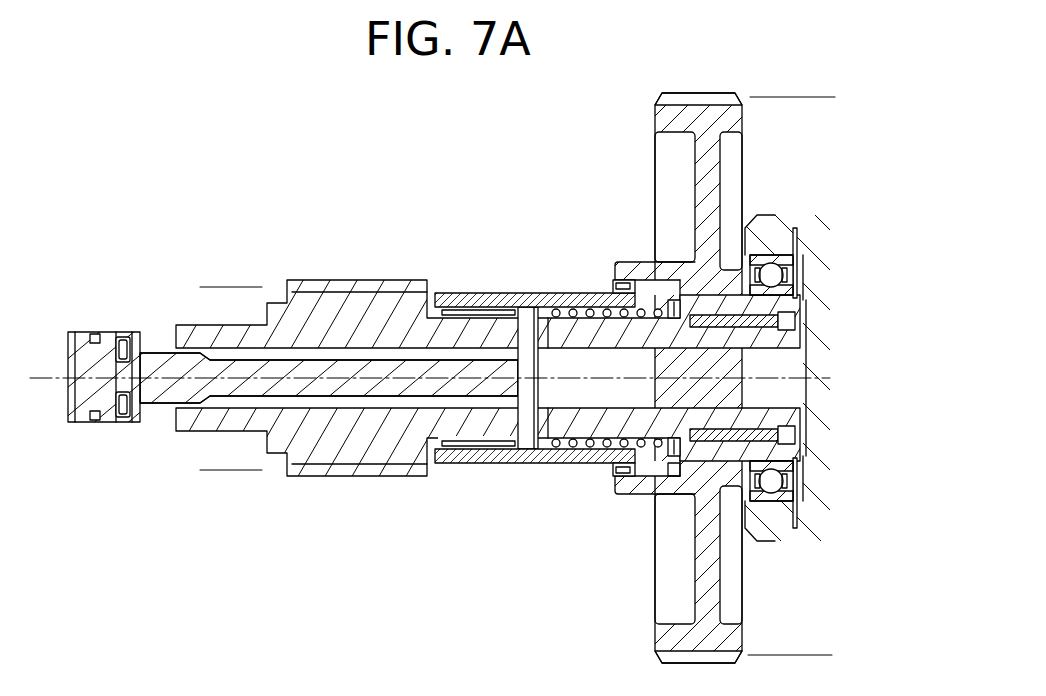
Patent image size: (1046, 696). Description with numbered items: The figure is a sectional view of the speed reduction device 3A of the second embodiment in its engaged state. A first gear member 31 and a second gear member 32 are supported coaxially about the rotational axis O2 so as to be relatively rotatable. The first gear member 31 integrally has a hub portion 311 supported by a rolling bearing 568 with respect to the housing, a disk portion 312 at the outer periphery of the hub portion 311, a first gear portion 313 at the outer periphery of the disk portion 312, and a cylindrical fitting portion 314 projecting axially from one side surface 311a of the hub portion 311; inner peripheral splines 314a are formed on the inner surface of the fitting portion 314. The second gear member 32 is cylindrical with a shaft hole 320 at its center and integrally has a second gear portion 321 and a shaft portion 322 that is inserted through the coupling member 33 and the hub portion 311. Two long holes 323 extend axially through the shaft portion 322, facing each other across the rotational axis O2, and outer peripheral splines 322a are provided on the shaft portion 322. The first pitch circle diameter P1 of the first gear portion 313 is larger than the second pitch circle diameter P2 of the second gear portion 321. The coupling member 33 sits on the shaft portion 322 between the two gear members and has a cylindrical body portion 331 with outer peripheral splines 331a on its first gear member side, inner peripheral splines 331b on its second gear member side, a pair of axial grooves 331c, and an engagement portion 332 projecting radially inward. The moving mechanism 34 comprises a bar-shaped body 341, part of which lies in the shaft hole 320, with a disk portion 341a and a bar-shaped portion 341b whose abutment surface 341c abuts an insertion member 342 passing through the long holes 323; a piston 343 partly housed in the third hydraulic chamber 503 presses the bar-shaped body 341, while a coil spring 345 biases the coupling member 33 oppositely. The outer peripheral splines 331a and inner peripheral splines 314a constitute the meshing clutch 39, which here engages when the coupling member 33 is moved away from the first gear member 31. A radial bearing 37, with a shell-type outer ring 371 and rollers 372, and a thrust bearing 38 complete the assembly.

The speed reduction device 3A is at (160, 212).
The first gear member 31 is at (543, 378).
The hub portion 311 is at (722, 470).
The side surface 311a is at (675, 462).
The disk portion 312 is at (712, 575).
The first gear portion 313 is at (725, 658).
The fitting portion 314 is at (632, 272).
The inner peripheral splines 314a is at (633, 278).
The second gear member 32 is at (476, 361).
The shaft hole 320 is at (802, 402).
The second gear portion 321 is at (350, 285).
The shaft portion 322 is at (782, 340).
The outer peripheral splines 322a is at (460, 443).
The long holes 323 is at (548, 323).
The coupling member 33 is at (614, 371).
The body portion 331 is at (500, 296).
The outer peripheral splines 331a is at (624, 282).
The inner peripheral splines 331b is at (445, 311).
The axial grooves 331c is at (455, 308).
The engagement portion 332 is at (548, 447).
The moving mechanism 34 is at (100, 335).
The bar-shaped body 341 is at (523, 377).
The disk portion 341a is at (128, 340).
The bar-shaped portion 341b is at (330, 390).
The abutment surface 341c is at (530, 376).
The insertion member 342 is at (530, 312).
The piston 343 is at (523, 377).
The coil spring 345 is at (617, 433).
The radial bearing 37 is at (848, 378).
The shell-type outer ring 371 is at (777, 447).
The rollers 372 is at (770, 437).
The thrust bearing 38 is at (670, 378).
The meshing clutch 39 is at (610, 478).
The third hydraulic chamber 503 is at (72, 365).
The rolling bearing 568 is at (795, 260).
The rotational axis O2 is at (826, 375).
The first pitch circle diameter P1 is at (807, 680).
The second pitch circle diameter P2 is at (224, 492).